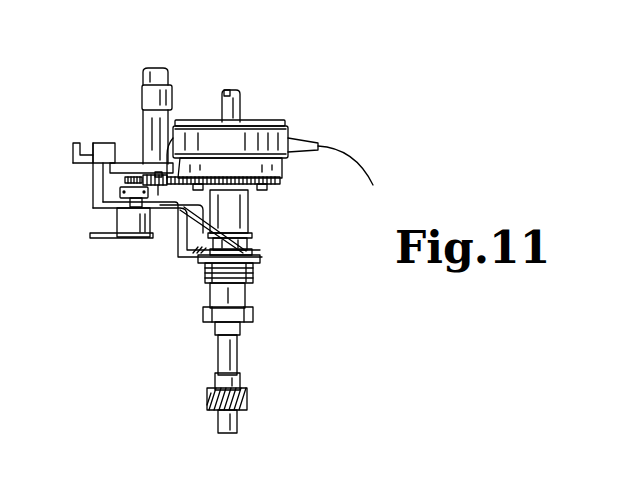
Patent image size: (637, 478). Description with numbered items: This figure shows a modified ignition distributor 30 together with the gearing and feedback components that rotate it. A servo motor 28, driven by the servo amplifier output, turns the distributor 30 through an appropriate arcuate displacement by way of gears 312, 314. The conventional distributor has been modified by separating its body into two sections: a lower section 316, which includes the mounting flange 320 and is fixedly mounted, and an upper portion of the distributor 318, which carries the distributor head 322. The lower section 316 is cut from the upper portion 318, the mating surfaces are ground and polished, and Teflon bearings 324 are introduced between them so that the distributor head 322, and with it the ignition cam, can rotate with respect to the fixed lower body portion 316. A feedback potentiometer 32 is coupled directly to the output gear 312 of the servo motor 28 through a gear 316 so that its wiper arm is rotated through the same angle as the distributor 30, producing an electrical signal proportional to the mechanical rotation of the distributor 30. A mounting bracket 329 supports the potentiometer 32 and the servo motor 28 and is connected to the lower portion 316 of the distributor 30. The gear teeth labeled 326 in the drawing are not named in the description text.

The servo motor 28 is at (158, 67).
The distributor 30 is at (272, 88).
The feedback potentiometer 32 is at (128, 228).
The gear 312 is at (160, 196).
The gear 314 is at (273, 190).
The lower section 316 is at (258, 299).
The upper portion of the distributor 318 is at (249, 220).
The mounting flange 320 is at (258, 272).
The distributor head 322 is at (288, 131).
The Teflon bearings 324 is at (252, 240).
The rack and gear 326 is at (125, 180).
The mounting bracket 329 is at (186, 256).